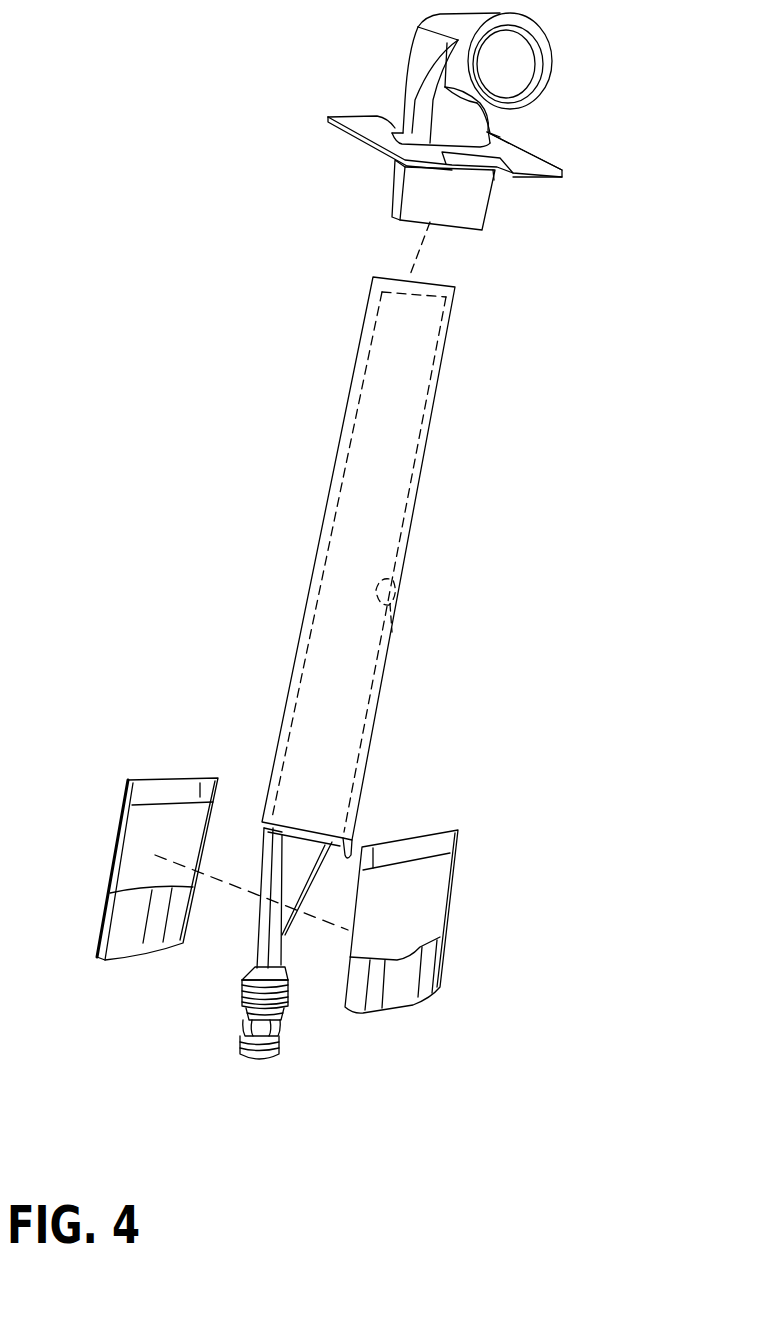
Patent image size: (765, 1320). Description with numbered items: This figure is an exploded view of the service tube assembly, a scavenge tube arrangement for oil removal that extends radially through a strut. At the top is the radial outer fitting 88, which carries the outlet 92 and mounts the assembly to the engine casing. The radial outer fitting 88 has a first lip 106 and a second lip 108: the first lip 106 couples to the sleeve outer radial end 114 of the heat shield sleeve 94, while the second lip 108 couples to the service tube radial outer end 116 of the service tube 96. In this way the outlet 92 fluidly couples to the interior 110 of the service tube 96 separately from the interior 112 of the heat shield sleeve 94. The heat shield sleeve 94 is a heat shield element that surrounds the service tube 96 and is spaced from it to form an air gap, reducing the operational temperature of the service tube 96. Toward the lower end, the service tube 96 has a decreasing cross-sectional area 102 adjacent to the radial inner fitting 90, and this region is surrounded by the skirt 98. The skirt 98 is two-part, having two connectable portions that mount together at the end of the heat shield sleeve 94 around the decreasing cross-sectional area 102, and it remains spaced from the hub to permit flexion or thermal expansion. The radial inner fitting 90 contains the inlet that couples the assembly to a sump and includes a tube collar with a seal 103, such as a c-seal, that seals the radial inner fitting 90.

The radial outer fitting 88 is at (328, 117).
The outlet 92 is at (517, 63).
The first lip 106 is at (495, 178).
The second lip 108 is at (467, 221).
The heat shield sleeve 94 is at (412, 543).
The interior of the service tube 110 is at (392, 481).
The service tube radial outer end 116 is at (397, 270).
The service tube 96 is at (397, 602).
The interior of the heat shield sleeve 112 is at (393, 633).
The decreasing cross-sectional area 102 is at (262, 848).
The sleeve outer radial end 114 is at (357, 847).
The skirt 98 is at (438, 820).
The radial inner fitting 90 is at (238, 983).
The seal 103 is at (290, 990).